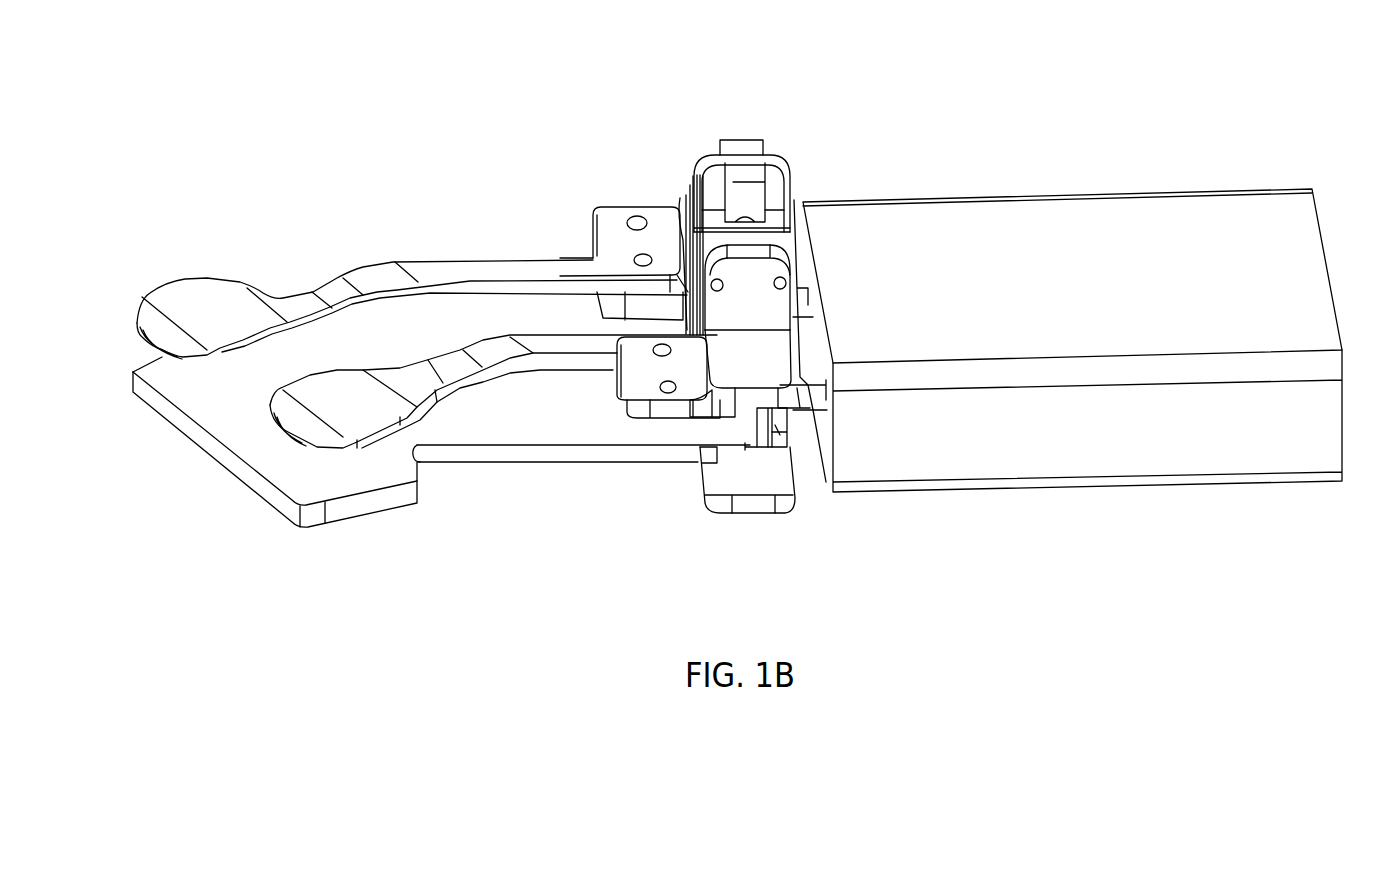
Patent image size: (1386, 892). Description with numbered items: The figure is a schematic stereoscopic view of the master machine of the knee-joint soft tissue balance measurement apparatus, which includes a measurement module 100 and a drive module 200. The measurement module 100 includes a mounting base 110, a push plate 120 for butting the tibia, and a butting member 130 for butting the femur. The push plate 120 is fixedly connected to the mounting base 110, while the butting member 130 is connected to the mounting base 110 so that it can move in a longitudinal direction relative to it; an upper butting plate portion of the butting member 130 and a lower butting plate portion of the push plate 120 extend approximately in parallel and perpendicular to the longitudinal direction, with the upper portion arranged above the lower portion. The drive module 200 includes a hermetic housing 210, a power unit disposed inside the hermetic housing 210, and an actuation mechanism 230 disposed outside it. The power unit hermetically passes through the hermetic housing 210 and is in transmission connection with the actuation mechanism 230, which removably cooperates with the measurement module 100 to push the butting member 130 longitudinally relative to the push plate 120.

The measurement module 100 is at (670, 200).
The mounting base 110 is at (738, 158).
The push plate 120 is at (255, 390).
The butting member 130 is at (462, 360).
The drive module 200 is at (946, 199).
The hermetic housing 210 is at (1032, 223).
The actuation mechanism 230 is at (787, 447).